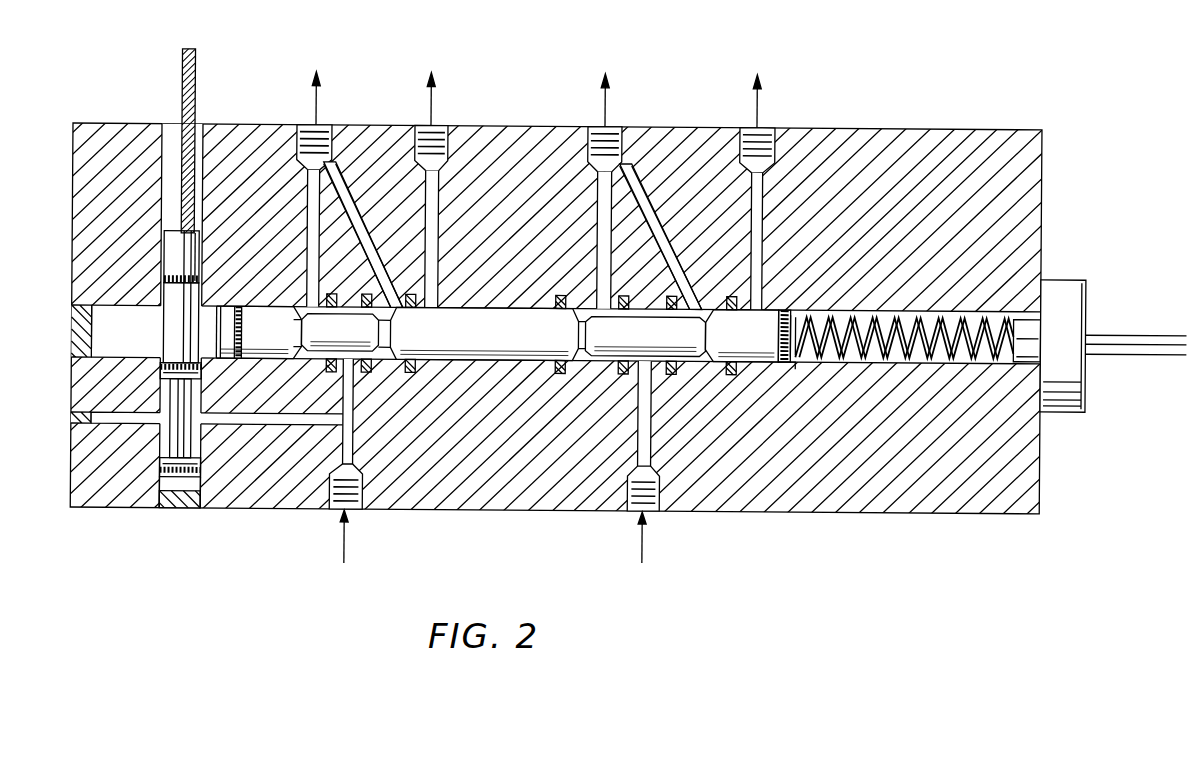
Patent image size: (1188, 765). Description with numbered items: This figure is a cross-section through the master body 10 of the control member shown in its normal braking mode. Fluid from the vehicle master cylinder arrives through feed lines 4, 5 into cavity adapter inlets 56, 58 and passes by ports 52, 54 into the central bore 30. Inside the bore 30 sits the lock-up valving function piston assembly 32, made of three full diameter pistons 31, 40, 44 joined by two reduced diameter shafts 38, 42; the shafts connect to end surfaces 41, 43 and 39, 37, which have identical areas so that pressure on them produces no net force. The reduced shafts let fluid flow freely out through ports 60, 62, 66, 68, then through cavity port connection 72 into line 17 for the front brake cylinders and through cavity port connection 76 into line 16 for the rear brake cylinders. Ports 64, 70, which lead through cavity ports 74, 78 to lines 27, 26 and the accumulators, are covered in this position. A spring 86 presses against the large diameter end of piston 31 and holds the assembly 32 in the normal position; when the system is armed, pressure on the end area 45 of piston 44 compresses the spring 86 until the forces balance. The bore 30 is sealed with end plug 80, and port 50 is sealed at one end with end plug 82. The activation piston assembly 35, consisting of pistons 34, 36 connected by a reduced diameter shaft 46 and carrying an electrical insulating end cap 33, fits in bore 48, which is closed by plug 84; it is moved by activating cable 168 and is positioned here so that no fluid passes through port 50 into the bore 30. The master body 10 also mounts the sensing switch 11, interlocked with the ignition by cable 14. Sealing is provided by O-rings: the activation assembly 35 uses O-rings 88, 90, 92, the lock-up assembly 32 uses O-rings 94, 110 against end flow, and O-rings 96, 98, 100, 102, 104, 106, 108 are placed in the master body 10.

The feed line 4 is at (345, 539).
The feed line 5 is at (643, 537).
The master body 10 is at (1046, 130).
The sensing switch 11 is at (1084, 272).
The cable 14 is at (1137, 328).
The wheel cylinder feed line 16 is at (610, 93).
The wheel cylinder feed line 17 is at (322, 94).
The accumulator line 26 is at (762, 95).
The accumulator line 27 is at (436, 94).
The central bore 30 is at (148, 343).
The piston 31 is at (783, 305).
The lock-up valving function piston assembly 32 is at (821, 305).
The electrical insulating end cap 33 is at (166, 240).
The piston 34 is at (176, 265).
The activation piston assembly 35 is at (197, 240).
The piston 36 is at (152, 503).
The end surface 37 is at (686, 300).
The reduced diameter shaft 38 is at (690, 342).
The end surface 39 is at (583, 305).
The piston 40 is at (515, 341).
The end surface 41 is at (300, 304).
The reduced diameter shaft 42 is at (353, 332).
The end surface 43 is at (388, 305).
The piston 44 is at (272, 341).
The end area 45 is at (212, 343).
The reduced diameter shaft 46 is at (178, 395).
The bore 48 is at (170, 130).
The port 50 is at (287, 417).
The port 52 is at (352, 402).
The port 54 is at (648, 436).
The cavity adapter inlet 56 is at (358, 508).
The cavity adapter inlet 58 is at (657, 508).
The port 60 is at (312, 196).
The port 62 is at (353, 220).
The port 64 is at (437, 226).
The port 66 is at (603, 193).
The port 68 is at (652, 224).
The port 70 is at (765, 226).
The cavity port connection 72 is at (300, 126).
The cavity port 74 is at (422, 124).
The cavity port connection 76 is at (594, 125).
The cavity port 78 is at (751, 125).
The end plug 80 is at (86, 308).
The end plug 82 is at (76, 418).
The plug 84 is at (184, 508).
The spring 86 is at (917, 303).
The O-ring 88 is at (203, 466).
The O-ring 90 is at (160, 372).
The O-ring 92 is at (201, 282).
The O-ring 94 is at (252, 298).
The O-ring 96 is at (333, 292).
The O-ring 98 is at (370, 370).
The O-ring 100 is at (414, 370).
The O-ring 102 is at (562, 371).
The O-ring 104 is at (623, 371).
The O-ring 106 is at (673, 371).
The O-ring 108 is at (734, 371).
The O-ring 110 is at (788, 360).
The activating cable 168 is at (196, 104).